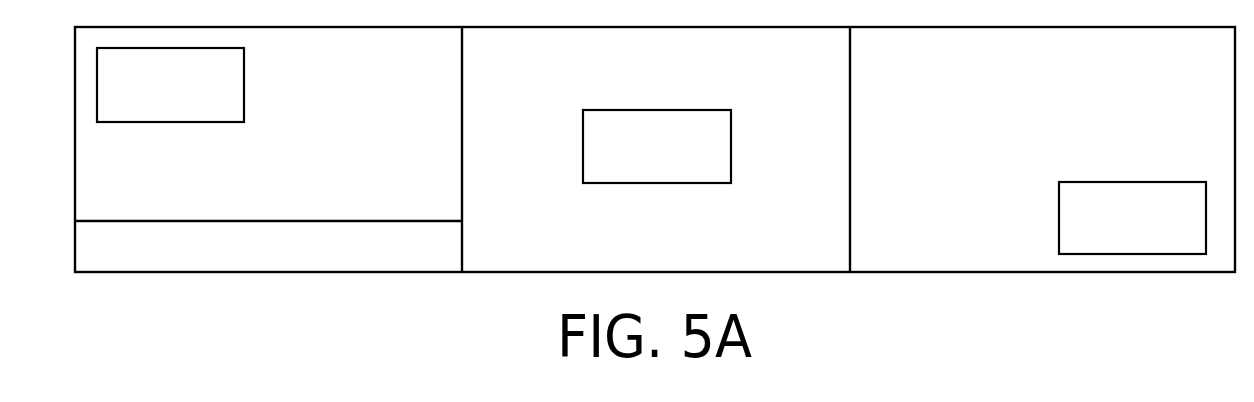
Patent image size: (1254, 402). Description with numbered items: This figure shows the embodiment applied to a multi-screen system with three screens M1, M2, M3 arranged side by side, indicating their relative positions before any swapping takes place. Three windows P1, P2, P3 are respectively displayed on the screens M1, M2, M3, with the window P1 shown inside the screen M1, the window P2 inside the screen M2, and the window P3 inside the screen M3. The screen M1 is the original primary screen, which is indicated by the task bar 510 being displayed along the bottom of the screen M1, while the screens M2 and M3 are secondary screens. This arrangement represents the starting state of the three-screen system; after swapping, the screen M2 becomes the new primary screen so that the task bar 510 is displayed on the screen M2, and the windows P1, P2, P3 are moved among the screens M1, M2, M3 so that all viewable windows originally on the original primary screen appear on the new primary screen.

The task bar 510 is at (368, 264).
The screen M1 is at (423, 46).
The screen M2 is at (812, 46).
The screen M3 is at (1200, 46).
The window P1 is at (170, 85).
The window P2 is at (657, 146).
The window P3 is at (1132, 218).